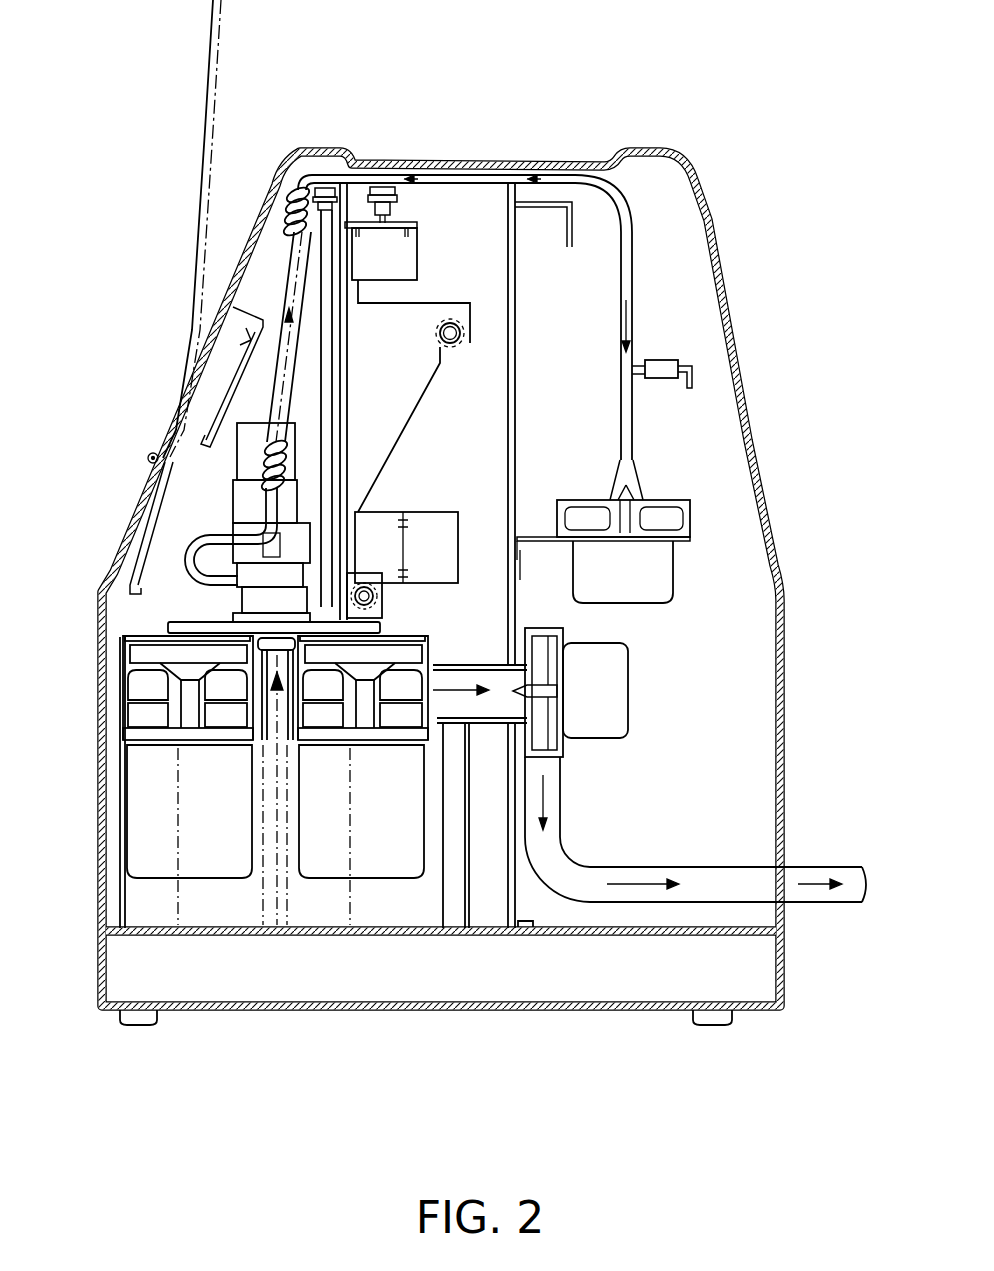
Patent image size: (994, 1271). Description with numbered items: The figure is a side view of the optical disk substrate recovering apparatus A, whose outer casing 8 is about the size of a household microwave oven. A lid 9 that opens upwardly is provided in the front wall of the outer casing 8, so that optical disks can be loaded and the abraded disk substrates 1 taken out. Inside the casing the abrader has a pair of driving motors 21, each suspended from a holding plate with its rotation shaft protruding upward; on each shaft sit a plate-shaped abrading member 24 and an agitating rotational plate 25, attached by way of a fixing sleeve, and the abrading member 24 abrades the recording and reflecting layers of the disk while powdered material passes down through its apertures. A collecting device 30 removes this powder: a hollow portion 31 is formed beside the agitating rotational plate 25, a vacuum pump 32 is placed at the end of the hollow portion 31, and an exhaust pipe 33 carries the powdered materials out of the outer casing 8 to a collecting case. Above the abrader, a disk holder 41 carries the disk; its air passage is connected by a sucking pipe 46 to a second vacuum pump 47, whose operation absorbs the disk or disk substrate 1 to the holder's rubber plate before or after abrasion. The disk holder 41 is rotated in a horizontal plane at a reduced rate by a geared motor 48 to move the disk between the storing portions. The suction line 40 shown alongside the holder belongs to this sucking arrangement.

The disk substrate 1 is at (226, 917).
The outer casing 8 is at (717, 274).
The lid 9 is at (208, 110).
The driving motor 21 is at (140, 826).
The abrading member 24 is at (133, 653).
The agitating rotational plate 25 is at (450, 870).
The collecting device 30 is at (659, 687).
The hollow portion 31 is at (483, 677).
The vacuum pump 32 is at (625, 718).
The exhaust pipe 33 is at (712, 877).
The suction tube 40 is at (259, 405).
The disk holder 41 is at (250, 600).
The sucking pipe 46 is at (198, 540).
The vacuum pump 47 is at (672, 578).
The geared motor 48 is at (240, 456).
The optical disk substrate recovering apparatus A is at (518, 141).